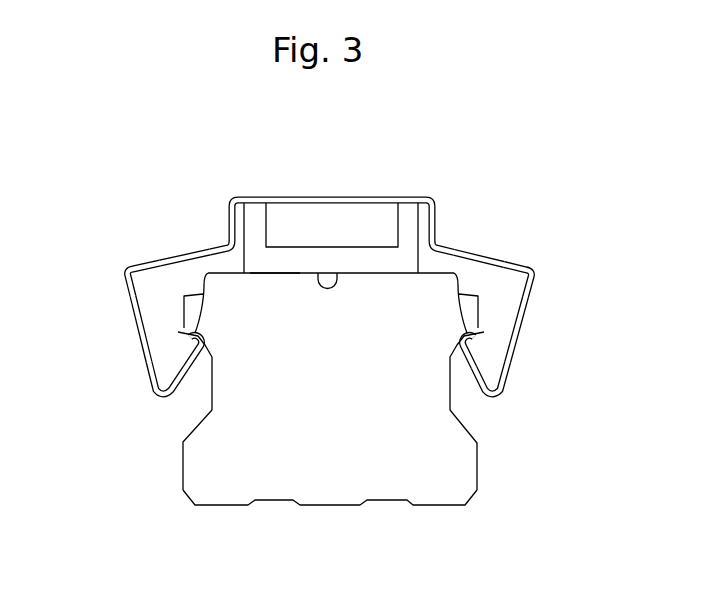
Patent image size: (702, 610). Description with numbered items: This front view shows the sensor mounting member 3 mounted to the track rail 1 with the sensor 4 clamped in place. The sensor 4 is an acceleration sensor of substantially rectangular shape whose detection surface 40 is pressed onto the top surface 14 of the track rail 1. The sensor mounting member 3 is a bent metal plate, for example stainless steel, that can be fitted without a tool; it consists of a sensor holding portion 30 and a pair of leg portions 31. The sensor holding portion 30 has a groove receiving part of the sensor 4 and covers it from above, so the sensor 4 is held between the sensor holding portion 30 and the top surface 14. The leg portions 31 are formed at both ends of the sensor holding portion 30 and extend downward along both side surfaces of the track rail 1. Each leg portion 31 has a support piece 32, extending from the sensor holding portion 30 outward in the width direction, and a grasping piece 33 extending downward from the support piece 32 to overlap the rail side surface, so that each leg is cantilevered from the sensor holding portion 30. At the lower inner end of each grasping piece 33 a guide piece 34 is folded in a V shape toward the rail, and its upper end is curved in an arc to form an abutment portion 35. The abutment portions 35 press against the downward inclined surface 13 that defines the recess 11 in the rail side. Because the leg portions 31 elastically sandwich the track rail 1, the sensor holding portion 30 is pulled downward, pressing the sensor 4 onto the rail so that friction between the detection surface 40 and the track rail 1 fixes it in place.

The track rail 1 is at (492, 490).
The sensor mounting member 3 is at (324, 278).
The sensor 4 is at (297, 222).
The recess 11 is at (192, 426).
The downward inclined surface 13 is at (207, 276).
The top surface 14 is at (275, 272).
The sensor holding portion 30 is at (365, 198).
The leg portions 31 is at (117, 266).
The support piece 32 is at (150, 264).
The grasping piece 33 is at (132, 302).
The guide piece 34 is at (174, 375).
The abutment portion 35 is at (192, 340).
The detection surface 40 is at (318, 273).